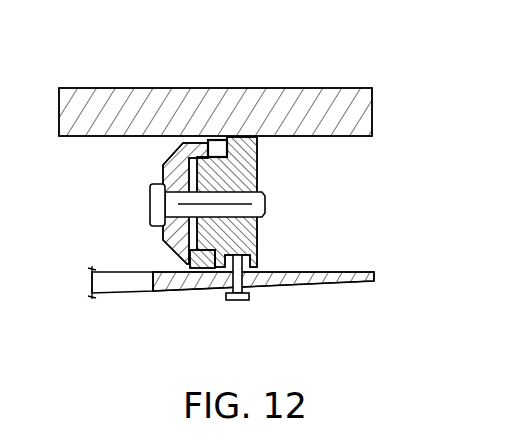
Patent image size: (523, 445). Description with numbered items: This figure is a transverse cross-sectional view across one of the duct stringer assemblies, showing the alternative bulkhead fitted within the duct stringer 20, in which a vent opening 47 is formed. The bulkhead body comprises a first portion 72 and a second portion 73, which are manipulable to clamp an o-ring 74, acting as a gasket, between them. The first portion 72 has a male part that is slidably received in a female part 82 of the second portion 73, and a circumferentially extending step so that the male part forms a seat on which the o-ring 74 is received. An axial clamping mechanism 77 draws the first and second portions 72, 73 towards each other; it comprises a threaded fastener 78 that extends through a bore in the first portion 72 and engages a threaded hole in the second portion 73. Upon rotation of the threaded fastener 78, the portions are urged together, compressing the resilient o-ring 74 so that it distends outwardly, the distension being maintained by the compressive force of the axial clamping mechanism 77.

The duct stringer 20 is at (343, 103).
The vent opening 47 is at (120, 287).
The first portion 72 is at (258, 232).
The second portion 73 is at (178, 258).
The o-ring 74 is at (217, 132).
The axial clamping mechanism 77 is at (152, 205).
The threaded fastener 78 is at (265, 205).
The female part 82 is at (205, 140).